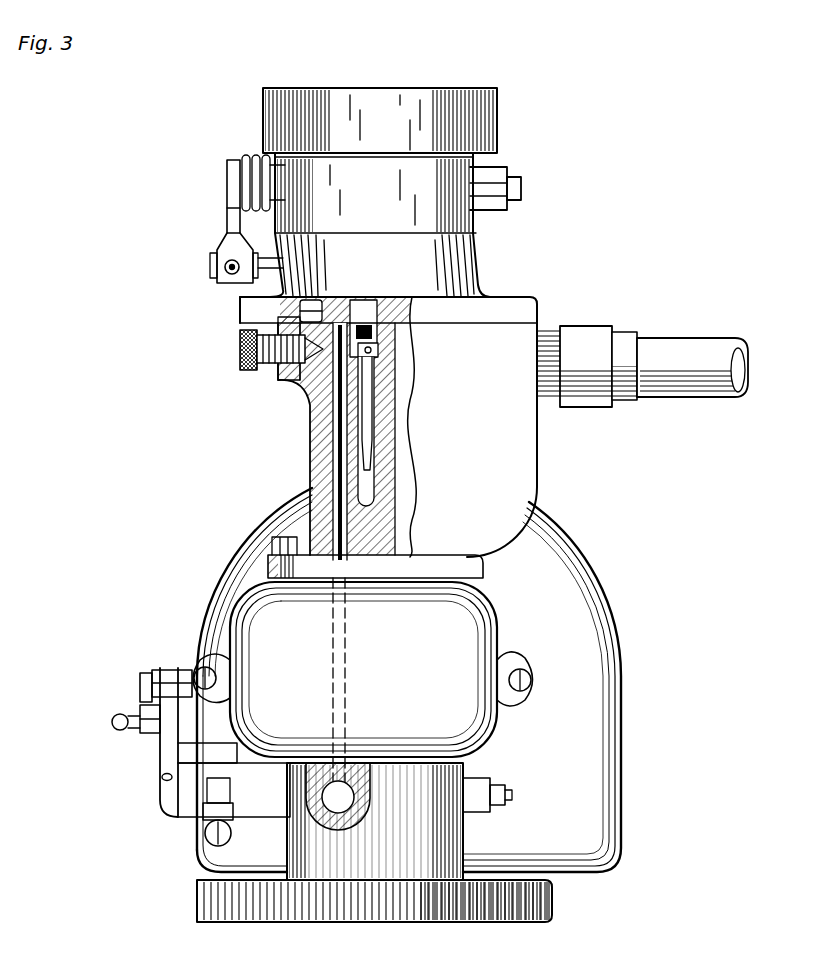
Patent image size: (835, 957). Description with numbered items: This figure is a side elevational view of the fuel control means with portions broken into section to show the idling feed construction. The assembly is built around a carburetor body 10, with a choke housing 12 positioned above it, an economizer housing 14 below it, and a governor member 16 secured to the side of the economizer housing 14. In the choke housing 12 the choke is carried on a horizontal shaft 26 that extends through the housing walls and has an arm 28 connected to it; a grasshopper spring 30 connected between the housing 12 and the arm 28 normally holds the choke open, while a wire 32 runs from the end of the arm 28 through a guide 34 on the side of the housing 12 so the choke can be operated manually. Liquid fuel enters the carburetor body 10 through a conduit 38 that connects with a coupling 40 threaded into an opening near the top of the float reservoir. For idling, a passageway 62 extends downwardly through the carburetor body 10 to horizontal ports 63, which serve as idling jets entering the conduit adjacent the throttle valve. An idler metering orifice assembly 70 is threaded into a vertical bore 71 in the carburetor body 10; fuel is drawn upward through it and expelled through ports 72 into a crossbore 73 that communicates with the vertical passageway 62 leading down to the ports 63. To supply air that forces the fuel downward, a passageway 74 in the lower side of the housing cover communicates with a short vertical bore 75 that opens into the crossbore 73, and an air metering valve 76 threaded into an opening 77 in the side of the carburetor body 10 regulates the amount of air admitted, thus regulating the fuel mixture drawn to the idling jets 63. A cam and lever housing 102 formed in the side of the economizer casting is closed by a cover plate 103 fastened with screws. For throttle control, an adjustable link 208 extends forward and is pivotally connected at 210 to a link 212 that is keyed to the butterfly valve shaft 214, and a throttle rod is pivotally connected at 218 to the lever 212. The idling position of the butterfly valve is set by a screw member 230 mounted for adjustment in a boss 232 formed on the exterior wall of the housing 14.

The carburetor body 10 is at (528, 458).
The choke housing 12 is at (484, 270).
The economizer housing 14 is at (474, 585).
The governor member 16 is at (600, 730).
The horizontal shaft 26 is at (521, 185).
The arm 28 is at (227, 216).
The grasshopper spring 30 is at (243, 182).
The wire 32 is at (225, 268).
The guide 34 is at (218, 248).
The conduit 38 is at (690, 392).
The coupling 40 is at (595, 408).
The passageway 62 is at (334, 462).
The horizontal ports 63 is at (372, 790).
The idler metering orifice assembly 70 is at (372, 420).
The vertical bore 71 is at (368, 472).
The ports 72 is at (380, 346).
The crossbore 73 is at (357, 312).
The passageway 74 is at (320, 297).
The short vertical bore 75 is at (246, 325).
The air metering valve 76 is at (241, 362).
The opening 77 is at (290, 372).
The cam and lever housing 102 is at (518, 658).
The cover plate 103 is at (248, 624).
The adjustable link 208 is at (158, 672).
The pivotal connection 210 is at (142, 688).
The link 212 is at (162, 755).
The butterfly valve shaft 214 is at (508, 794).
The pivotal connection 218 is at (113, 716).
The screw member 230 is at (205, 834).
The boss 232 is at (200, 785).